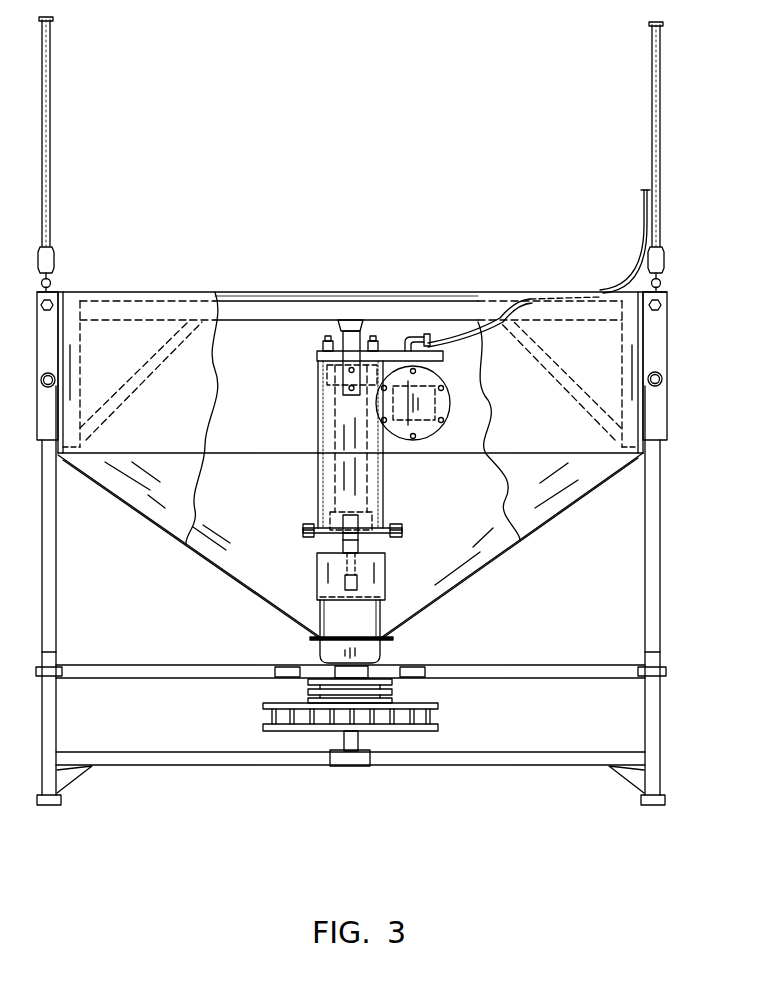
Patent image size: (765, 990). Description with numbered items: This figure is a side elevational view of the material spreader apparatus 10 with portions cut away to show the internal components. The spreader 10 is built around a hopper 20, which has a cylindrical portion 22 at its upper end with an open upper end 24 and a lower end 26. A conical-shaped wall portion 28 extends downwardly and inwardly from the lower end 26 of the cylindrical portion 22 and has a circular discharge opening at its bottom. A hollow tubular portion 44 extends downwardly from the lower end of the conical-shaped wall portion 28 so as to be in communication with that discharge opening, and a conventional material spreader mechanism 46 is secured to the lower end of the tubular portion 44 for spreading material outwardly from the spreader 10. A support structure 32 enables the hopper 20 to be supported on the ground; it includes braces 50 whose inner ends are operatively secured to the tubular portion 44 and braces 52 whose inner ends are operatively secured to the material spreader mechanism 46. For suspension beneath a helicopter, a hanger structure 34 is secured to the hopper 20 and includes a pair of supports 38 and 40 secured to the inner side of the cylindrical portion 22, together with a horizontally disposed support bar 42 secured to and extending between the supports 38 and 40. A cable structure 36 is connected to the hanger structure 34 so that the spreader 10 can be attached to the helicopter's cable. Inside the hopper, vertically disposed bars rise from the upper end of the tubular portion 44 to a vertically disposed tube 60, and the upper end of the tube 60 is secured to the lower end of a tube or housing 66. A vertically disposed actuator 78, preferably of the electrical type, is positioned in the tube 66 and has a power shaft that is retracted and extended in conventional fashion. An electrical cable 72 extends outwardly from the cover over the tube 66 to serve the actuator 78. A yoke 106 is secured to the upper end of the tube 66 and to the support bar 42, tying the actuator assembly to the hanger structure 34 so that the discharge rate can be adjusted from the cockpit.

The material spreader apparatus 10 is at (624, 55).
The hopper 20 is at (681, 382).
The cylindrical portion 22 is at (297, 343).
The open upper end 24 is at (388, 268).
The lower end 26 is at (247, 455).
The conical-shaped wall portion 28 is at (468, 580).
The support structure 32 is at (60, 607).
The hanger structure 34 is at (54, 330).
The cable structure 36 is at (54, 98).
The support 38 is at (70, 435).
The support 40 is at (630, 412).
The support bar 42 is at (415, 313).
The tubular portion 44 is at (386, 653).
The material spreader mechanism 46 is at (447, 715).
The braces 50 is at (214, 668).
The braces 52 is at (168, 764).
The tube 60 is at (375, 573).
The tube 66 is at (387, 488).
The electrical cable 72 is at (465, 322).
The actuator 78 is at (337, 424).
The yoke 106 is at (353, 328).